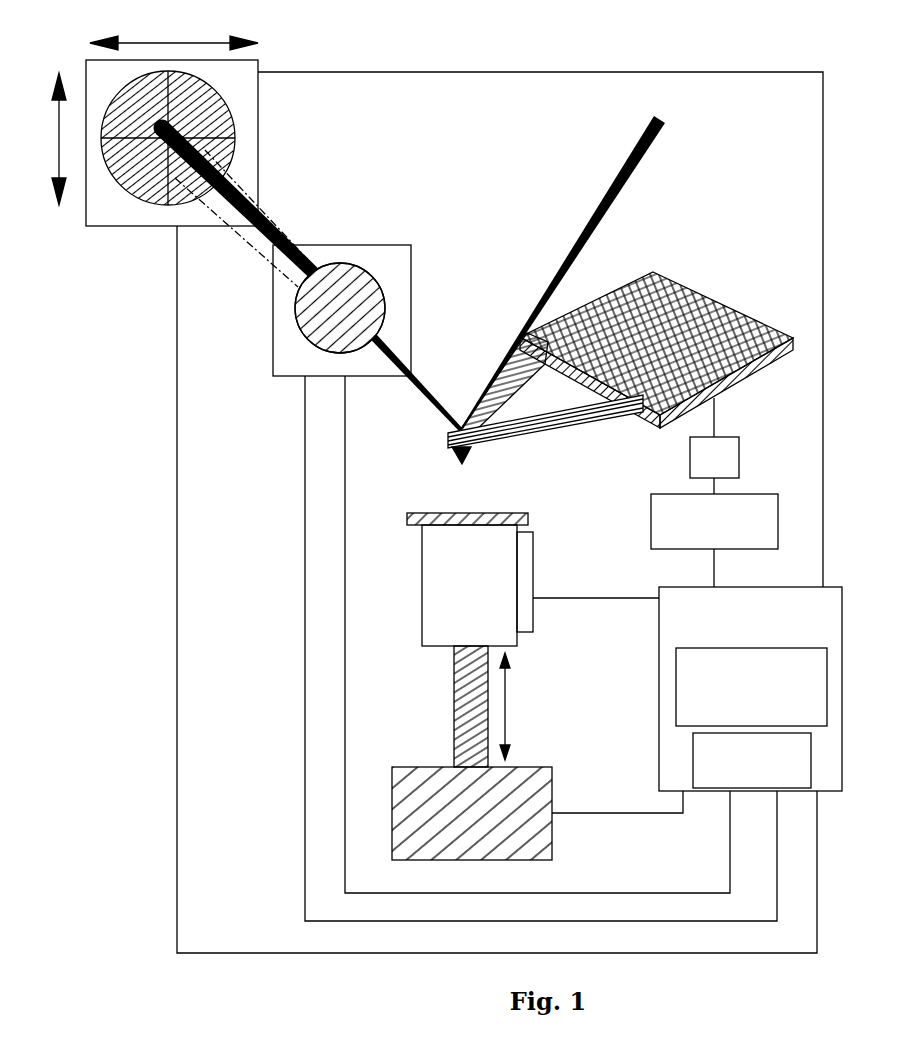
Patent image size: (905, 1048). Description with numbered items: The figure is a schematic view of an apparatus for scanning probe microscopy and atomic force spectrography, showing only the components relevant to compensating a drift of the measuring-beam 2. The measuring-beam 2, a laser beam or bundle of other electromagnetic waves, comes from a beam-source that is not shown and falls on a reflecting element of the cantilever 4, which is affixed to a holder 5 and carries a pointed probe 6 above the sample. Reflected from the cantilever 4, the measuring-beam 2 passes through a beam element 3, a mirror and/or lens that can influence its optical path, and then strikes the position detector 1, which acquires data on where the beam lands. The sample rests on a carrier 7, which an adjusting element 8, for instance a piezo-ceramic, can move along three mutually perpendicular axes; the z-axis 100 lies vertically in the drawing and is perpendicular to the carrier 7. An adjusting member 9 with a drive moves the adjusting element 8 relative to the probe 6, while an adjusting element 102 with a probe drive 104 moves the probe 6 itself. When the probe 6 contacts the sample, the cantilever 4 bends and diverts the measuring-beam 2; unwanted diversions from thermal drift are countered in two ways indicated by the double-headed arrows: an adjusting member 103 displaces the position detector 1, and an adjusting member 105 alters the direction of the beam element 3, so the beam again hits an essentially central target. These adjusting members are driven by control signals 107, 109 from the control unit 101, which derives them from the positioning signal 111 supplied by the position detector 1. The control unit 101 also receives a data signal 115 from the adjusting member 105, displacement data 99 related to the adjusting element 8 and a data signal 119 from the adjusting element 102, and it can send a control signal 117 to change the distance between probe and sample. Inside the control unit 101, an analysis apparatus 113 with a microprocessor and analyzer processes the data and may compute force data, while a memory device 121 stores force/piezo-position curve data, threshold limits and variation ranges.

The position detector 1 is at (217, 88).
The measuring-beam 2 is at (253, 190).
The beam element 3 is at (373, 277).
The cantilever 4 is at (568, 420).
The holder 5 is at (707, 300).
The probe 6 is at (448, 452).
The carrier 7 is at (407, 514).
The adjusting element 8 is at (422, 578).
The adjusting member 9 is at (392, 810).
The displacement data 99 is at (590, 598).
The z-axis 100 is at (533, 553).
The control unit 101 is at (750, 689).
The adjusting element 102 is at (714, 513).
The adjusting member 103 is at (140, 226).
The probe drive 104 is at (714, 438).
The adjusting member 105 is at (285, 378).
The control signal 107 is at (305, 491).
The control signal 109 is at (177, 377).
The positioning signal 111 is at (403, 72).
The analysis apparatus 113 is at (751, 687).
The data signal 115 is at (345, 698).
The control signal 117 is at (625, 813).
The data signal 119 is at (714, 572).
The memory device 121 is at (752, 760).